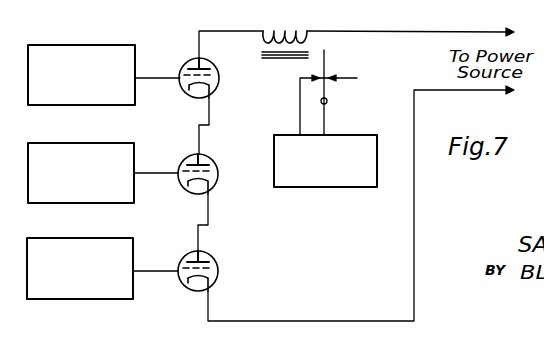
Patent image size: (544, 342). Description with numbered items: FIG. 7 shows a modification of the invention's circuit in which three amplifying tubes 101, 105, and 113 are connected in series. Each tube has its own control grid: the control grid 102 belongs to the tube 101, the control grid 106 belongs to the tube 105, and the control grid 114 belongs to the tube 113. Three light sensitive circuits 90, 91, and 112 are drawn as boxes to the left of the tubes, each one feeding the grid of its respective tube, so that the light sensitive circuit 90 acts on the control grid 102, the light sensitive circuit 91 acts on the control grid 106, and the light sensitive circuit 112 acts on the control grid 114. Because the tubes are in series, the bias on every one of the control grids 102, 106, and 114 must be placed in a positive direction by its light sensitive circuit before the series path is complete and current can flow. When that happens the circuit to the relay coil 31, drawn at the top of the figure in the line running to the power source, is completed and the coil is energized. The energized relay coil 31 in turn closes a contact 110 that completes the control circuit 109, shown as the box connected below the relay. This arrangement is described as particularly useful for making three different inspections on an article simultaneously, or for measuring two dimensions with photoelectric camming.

The light sensitive circuit 90 is at (123, 45).
The light sensitive circuit 91 is at (123, 143).
The light sensitive circuit 112 is at (112, 238).
The control grid 102 is at (186, 68).
The amplifying tube 101 is at (176, 99).
The control grid 106 is at (182, 168).
The amplifying tube 105 is at (176, 194).
The control grid 114 is at (182, 267).
The amplifying tube 113 is at (176, 292).
The relay coil 31 is at (293, 25).
The relay switch contact 110 is at (327, 100).
The control circuit 109 is at (299, 189).